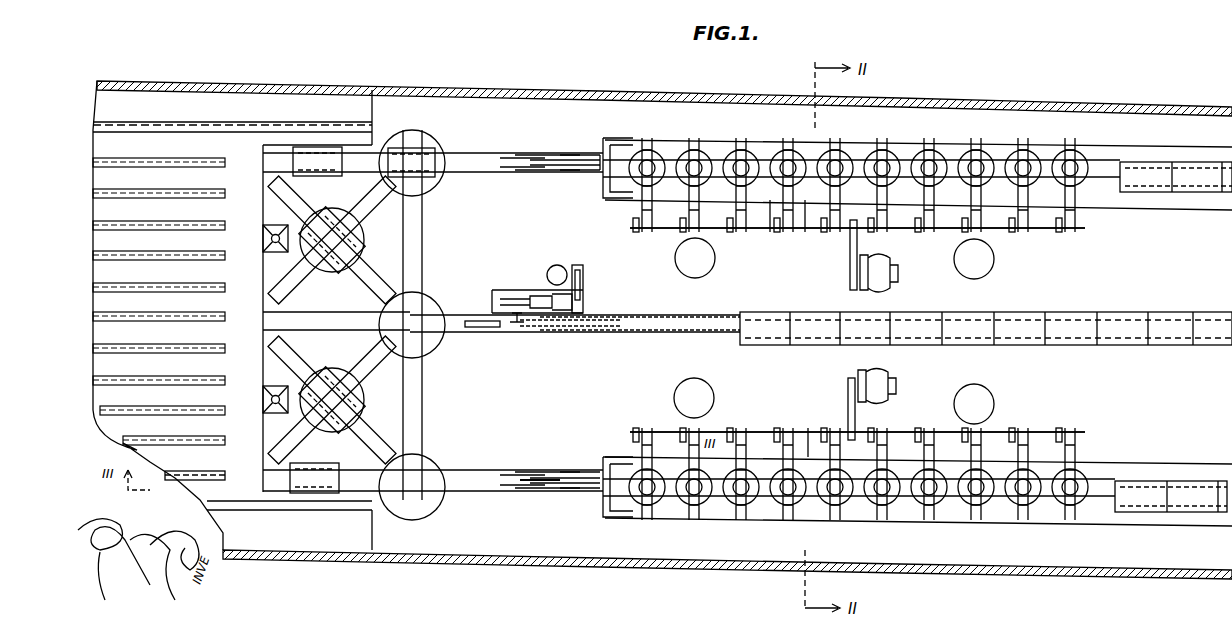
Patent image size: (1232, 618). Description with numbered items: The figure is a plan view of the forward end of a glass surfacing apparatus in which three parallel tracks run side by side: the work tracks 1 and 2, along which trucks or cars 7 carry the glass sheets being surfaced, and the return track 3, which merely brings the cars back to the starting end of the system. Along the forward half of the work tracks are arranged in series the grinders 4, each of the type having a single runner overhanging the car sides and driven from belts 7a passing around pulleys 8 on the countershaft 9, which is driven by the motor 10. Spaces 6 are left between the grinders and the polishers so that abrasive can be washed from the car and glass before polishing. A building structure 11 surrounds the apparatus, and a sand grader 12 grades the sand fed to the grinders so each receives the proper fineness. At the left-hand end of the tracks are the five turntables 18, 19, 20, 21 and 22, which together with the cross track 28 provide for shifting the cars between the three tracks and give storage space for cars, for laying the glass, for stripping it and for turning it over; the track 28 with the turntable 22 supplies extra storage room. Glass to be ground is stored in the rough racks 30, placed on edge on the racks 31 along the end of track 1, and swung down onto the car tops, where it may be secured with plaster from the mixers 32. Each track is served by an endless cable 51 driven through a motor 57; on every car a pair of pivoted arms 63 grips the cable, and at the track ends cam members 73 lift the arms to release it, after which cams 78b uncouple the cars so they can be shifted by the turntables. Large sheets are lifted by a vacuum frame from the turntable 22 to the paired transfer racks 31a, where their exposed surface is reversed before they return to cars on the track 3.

The work track 1 is at (477, 173).
The work track 2 is at (476, 492).
The return track 3 is at (452, 333).
The grinders 4 is at (643, 150).
The spaces 6 is at (1141, 226).
The trucks or cars 7 is at (322, 176).
The belts 7a is at (772, 233).
The pulleys 8 is at (781, 233).
The countershaft 9 is at (811, 233).
The motor 10 is at (898, 284).
The building structure 11 is at (621, 96).
The sand grader 12 is at (992, 270).
The turntable 18 is at (422, 141).
The turntable 19 is at (432, 303).
The turntable 20 is at (427, 469).
The turntable 21 is at (360, 244).
The turntable 22 is at (360, 403).
The cross track 28 is at (416, 259).
The rough racks 30 is at (233, 178).
The racks 31 is at (322, 132).
The transfer racks 31a is at (228, 474).
The mixers 32 is at (262, 250).
The cable 51 is at (581, 158).
The motor 57 is at (557, 266).
The arms 63 is at (528, 498).
The cam members 73 is at (514, 156).
The cams 78b is at (486, 328).